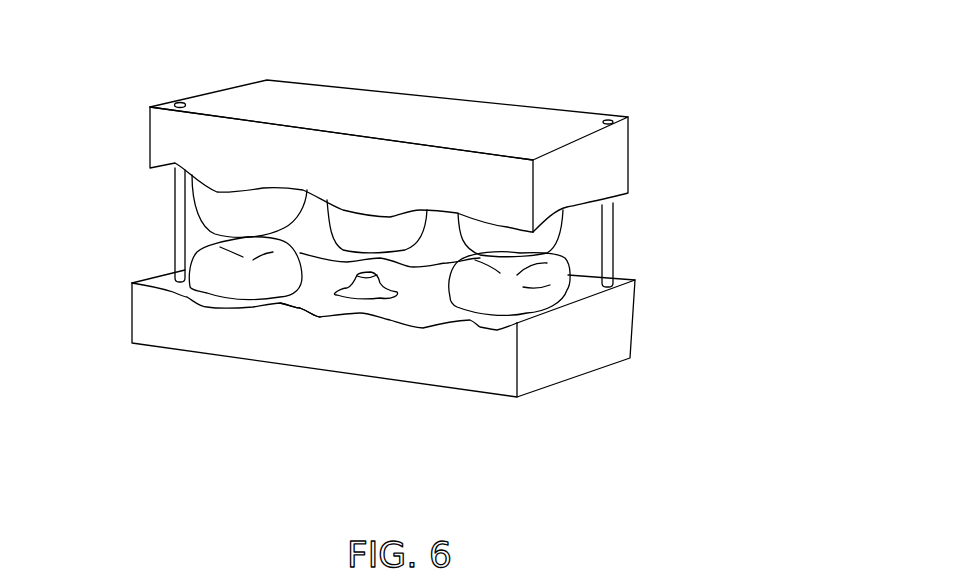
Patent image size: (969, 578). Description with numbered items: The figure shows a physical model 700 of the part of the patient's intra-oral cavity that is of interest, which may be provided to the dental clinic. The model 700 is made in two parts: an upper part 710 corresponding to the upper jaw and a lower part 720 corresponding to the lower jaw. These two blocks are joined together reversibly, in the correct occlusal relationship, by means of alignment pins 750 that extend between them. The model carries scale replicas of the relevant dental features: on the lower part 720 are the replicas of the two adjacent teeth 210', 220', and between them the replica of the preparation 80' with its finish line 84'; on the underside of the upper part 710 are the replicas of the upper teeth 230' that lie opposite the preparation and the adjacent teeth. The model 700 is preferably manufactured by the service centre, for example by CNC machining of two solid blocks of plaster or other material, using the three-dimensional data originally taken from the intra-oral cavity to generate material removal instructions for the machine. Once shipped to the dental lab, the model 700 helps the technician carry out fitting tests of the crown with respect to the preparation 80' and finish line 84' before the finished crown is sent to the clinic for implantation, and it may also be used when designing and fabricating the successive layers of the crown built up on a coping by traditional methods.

The physical model 700 is at (451, 237).
The upper part 710 is at (432, 153).
The lower part 720 is at (608, 332).
The alignment pins 750 is at (182, 222).
The upper teeth replica 230' is at (472, 153).
The adjacent tooth replica 210' is at (192, 312).
The adjacent tooth replica 220' is at (547, 332).
The preparation replica 80' is at (362, 348).
The finish line replica 84' is at (266, 349).